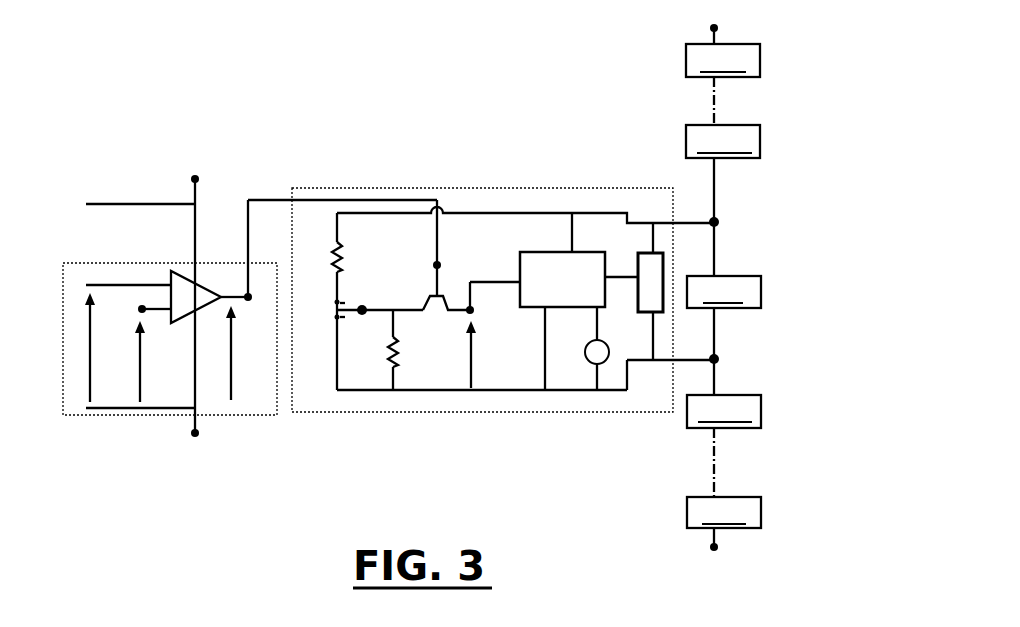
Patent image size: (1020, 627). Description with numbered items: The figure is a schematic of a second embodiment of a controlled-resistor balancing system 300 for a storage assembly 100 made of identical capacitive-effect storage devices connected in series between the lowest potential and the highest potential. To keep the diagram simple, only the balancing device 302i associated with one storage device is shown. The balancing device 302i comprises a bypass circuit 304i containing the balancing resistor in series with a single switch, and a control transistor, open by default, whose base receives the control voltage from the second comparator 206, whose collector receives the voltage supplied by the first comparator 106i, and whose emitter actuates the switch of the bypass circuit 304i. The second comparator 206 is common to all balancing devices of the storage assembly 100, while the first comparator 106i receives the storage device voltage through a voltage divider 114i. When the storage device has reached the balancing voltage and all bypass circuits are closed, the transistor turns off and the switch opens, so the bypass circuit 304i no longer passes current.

The balancing system 300 is at (150, 530).
The second comparator 206 is at (73, 262).
The balancing device 302i is at (372, 188).
The bypass circuit 304i is at (360, 391).
The first comparator 106i is at (586, 296).
The voltage divider 114i is at (638, 253).
The storage assembly 100 is at (790, 136).